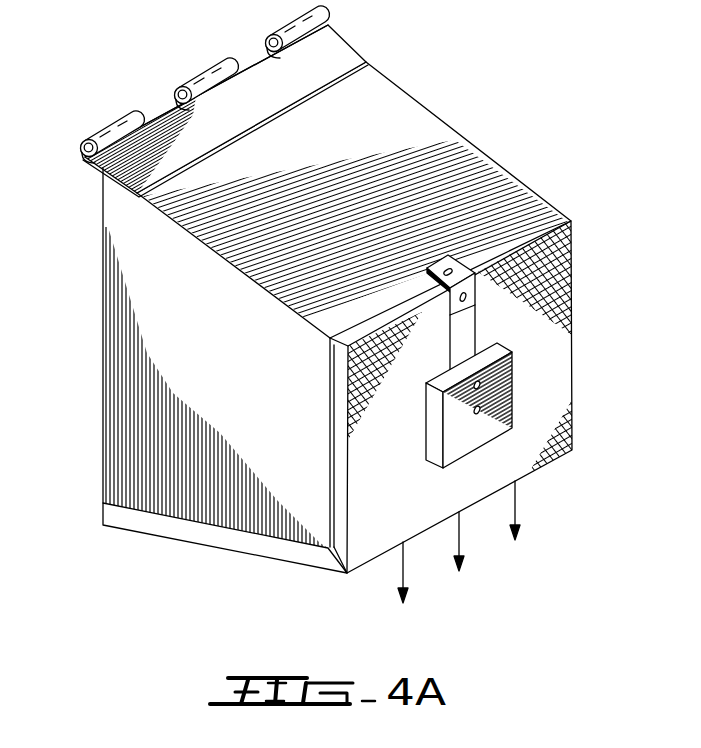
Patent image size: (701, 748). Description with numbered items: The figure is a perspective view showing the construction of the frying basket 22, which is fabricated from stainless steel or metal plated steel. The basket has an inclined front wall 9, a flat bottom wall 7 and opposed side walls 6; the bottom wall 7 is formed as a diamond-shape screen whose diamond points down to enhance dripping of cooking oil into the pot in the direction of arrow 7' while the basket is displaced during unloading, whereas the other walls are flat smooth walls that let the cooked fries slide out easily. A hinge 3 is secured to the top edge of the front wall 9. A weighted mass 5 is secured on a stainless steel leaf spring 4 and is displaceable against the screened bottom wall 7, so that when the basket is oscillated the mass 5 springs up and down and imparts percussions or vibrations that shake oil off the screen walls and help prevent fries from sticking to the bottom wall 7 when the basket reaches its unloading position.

The hinge 3 is at (203, 77).
The leaf spring 4 is at (460, 325).
The weighted mass 5 is at (462, 410).
The side walls 6 is at (160, 324).
The bottom wall 7 is at (473, 397).
The arrow 7' is at (459, 554).
The front wall 9 is at (452, 197).
The frying basket 22 is at (324, 317).